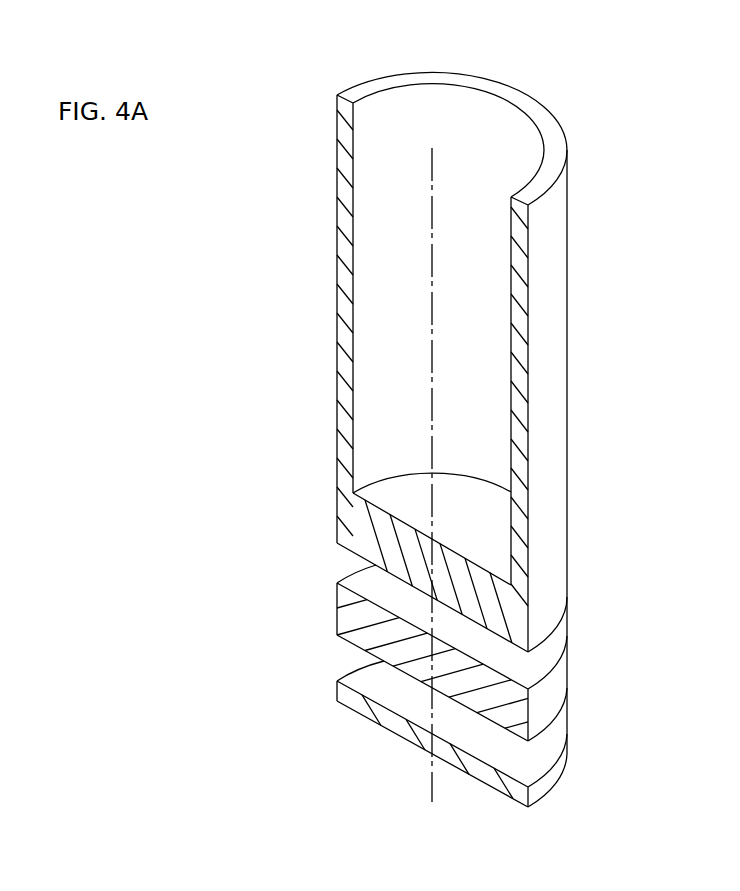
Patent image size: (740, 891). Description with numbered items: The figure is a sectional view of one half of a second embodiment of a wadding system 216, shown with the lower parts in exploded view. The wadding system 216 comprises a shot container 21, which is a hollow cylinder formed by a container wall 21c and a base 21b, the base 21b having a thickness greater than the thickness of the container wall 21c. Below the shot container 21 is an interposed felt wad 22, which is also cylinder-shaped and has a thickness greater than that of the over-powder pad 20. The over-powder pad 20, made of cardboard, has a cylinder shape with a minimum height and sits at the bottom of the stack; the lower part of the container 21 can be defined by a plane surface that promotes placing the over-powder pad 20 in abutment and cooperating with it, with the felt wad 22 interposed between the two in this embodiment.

The wadding system 216 is at (255, 327).
The shot container 21 is at (573, 379).
The container wall 21c is at (345, 223).
The base 21b is at (512, 621).
The felt wad 22 is at (538, 661).
The over-powder pad 20 is at (535, 763).